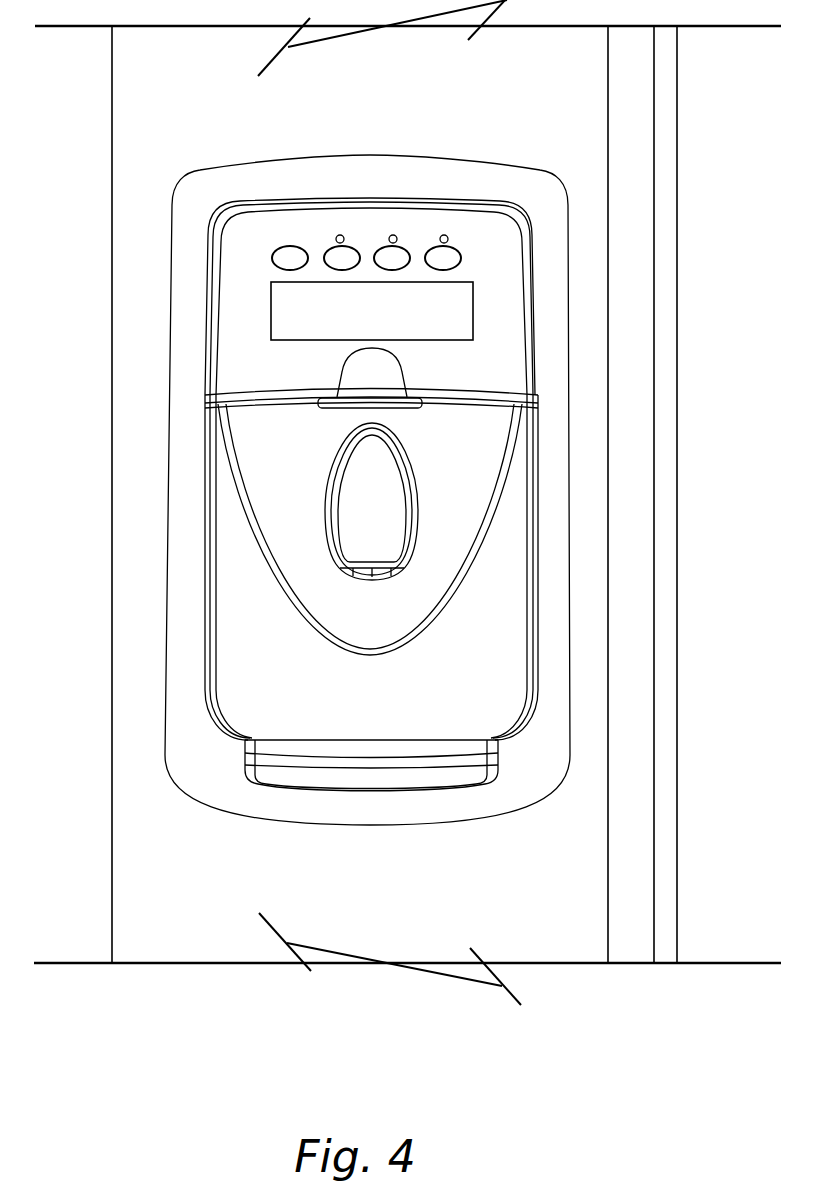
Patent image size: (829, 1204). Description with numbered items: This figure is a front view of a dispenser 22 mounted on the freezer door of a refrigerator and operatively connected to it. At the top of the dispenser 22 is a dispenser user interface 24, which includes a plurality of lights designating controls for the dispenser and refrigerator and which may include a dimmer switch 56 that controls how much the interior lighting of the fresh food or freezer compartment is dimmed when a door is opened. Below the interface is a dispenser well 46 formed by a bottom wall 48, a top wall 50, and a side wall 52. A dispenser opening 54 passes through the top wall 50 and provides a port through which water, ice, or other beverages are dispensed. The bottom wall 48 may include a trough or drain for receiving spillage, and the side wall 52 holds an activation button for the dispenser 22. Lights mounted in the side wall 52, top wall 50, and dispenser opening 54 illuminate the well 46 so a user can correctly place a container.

The dispenser 22 is at (155, 160).
The dispenser user interface 24 is at (295, 295).
The dispenser well 46 is at (205, 572).
The bottom wall 48 is at (413, 739).
The top wall 50 is at (472, 402).
The side wall 52 is at (297, 687).
The dispenser opening 54 is at (343, 408).
The dimmer switch 56 is at (347, 256).